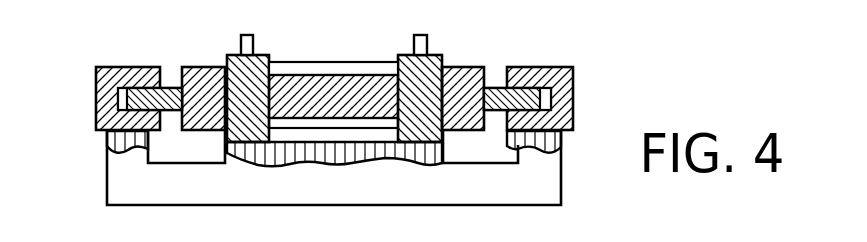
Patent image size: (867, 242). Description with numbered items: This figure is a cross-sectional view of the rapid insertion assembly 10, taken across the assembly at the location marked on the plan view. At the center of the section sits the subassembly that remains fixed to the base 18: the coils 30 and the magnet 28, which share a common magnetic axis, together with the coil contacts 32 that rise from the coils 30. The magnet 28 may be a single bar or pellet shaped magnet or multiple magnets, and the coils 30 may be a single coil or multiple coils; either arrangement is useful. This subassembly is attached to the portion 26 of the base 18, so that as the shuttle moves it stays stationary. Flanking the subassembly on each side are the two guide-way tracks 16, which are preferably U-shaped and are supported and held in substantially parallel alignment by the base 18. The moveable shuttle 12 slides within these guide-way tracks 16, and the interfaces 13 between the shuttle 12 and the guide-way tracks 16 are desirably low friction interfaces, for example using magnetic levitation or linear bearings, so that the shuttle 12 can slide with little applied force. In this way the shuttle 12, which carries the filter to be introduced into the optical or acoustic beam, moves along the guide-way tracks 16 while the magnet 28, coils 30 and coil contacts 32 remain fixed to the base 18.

The rapid insertion assembly 10 is at (630, 93).
The moveable shuttle 12 is at (168, 88).
The interfaces 13 is at (145, 108).
The guide-way tracks 16 is at (96, 84).
The base 18 is at (507, 199).
The portion of base 26 is at (467, 113).
The magnet 28 is at (250, 166).
The coils 30 is at (315, 62).
The coil contacts 32 is at (253, 45).